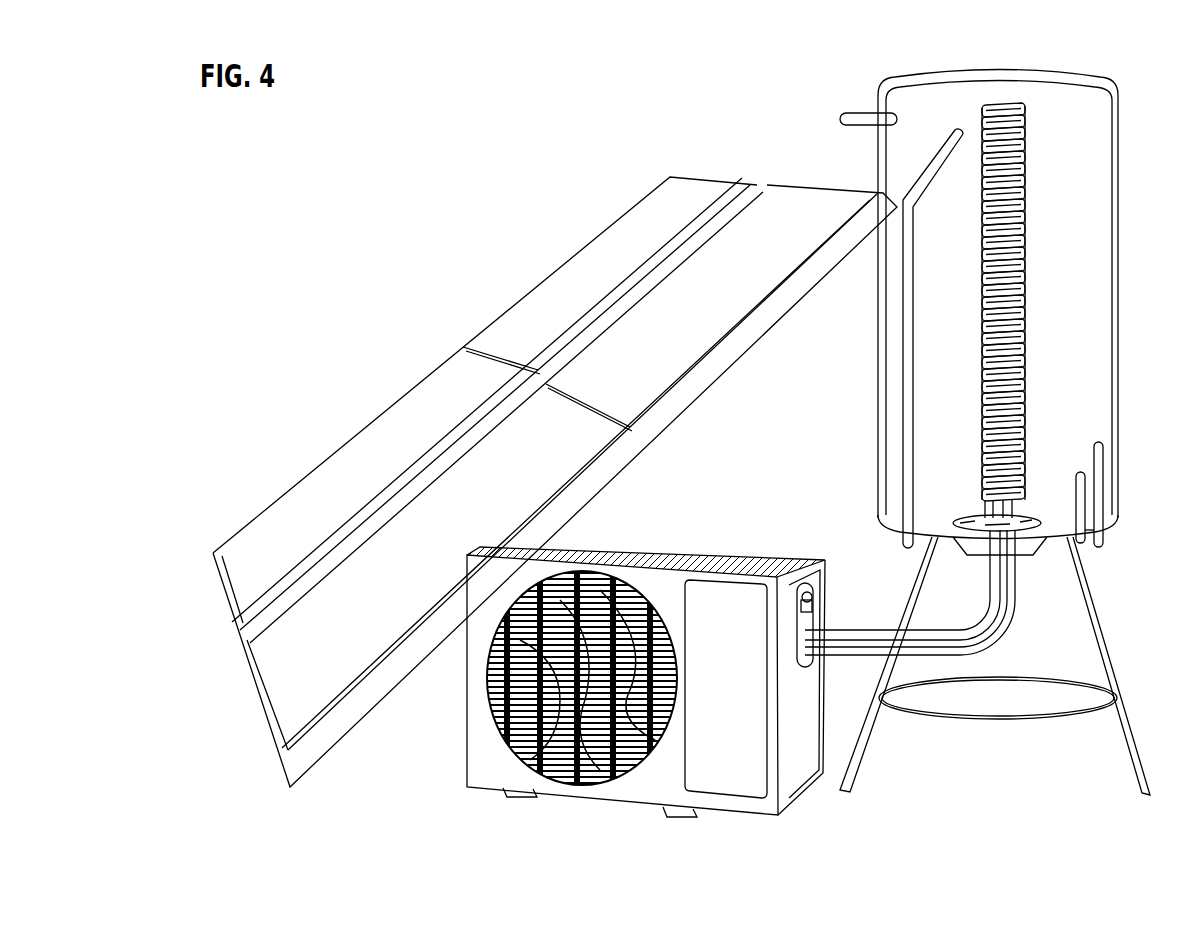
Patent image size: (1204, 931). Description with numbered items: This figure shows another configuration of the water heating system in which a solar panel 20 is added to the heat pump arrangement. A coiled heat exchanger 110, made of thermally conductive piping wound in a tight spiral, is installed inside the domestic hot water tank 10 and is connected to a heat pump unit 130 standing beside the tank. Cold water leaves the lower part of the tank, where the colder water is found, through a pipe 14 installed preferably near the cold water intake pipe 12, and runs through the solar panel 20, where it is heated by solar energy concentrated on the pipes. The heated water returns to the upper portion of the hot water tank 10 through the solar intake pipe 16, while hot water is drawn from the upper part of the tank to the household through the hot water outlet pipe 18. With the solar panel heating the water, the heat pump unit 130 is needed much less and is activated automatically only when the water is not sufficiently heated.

The domestic hot water tank 10 is at (1092, 345).
The coiled heat exchanger 110 is at (1025, 238).
The cold water intake pipe 12 is at (1102, 500).
The pipe 14 is at (1080, 543).
The solar intake pipe 16 is at (866, 113).
The hot water outlet pipe 18 is at (900, 457).
The solar panel 20 is at (428, 400).
The heat pump unit 130 is at (430, 785).